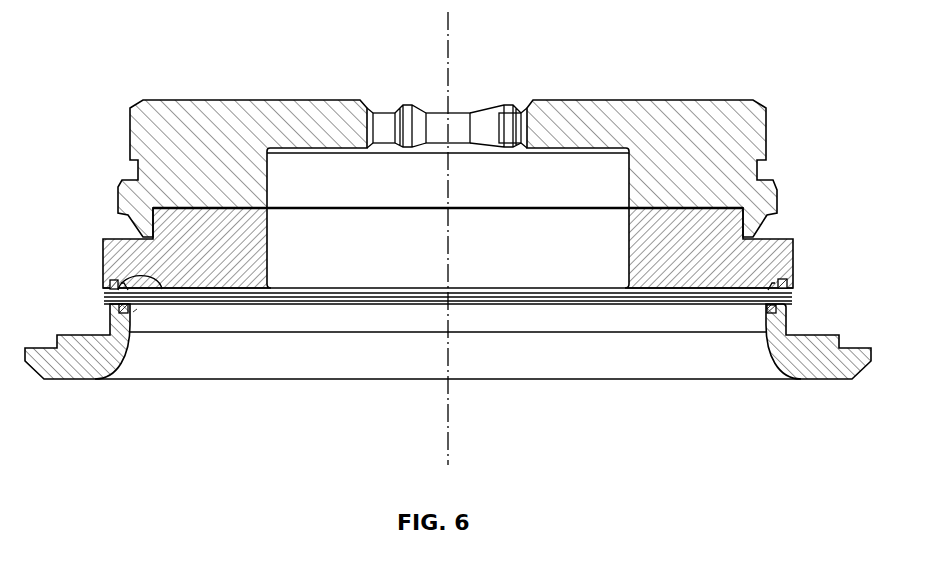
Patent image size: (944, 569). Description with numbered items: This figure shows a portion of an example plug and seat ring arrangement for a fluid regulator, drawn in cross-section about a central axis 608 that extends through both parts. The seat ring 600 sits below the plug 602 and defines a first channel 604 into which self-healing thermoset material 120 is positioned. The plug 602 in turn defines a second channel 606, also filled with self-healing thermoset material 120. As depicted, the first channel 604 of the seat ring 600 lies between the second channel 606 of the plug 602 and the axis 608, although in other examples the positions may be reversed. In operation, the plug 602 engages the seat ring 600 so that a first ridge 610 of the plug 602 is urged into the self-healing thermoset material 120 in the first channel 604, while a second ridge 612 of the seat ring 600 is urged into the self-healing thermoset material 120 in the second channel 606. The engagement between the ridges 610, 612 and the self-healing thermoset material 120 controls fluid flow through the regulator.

The seat ring 600 is at (63, 371).
The plug 602 is at (140, 143).
The first channel 604 is at (118, 308).
The second channel 606 is at (112, 268).
The axis 608 is at (447, 55).
The first ridge 610 is at (145, 278).
The second ridge 612 is at (112, 303).
The self-healing thermoset material 120 is at (162, 289).